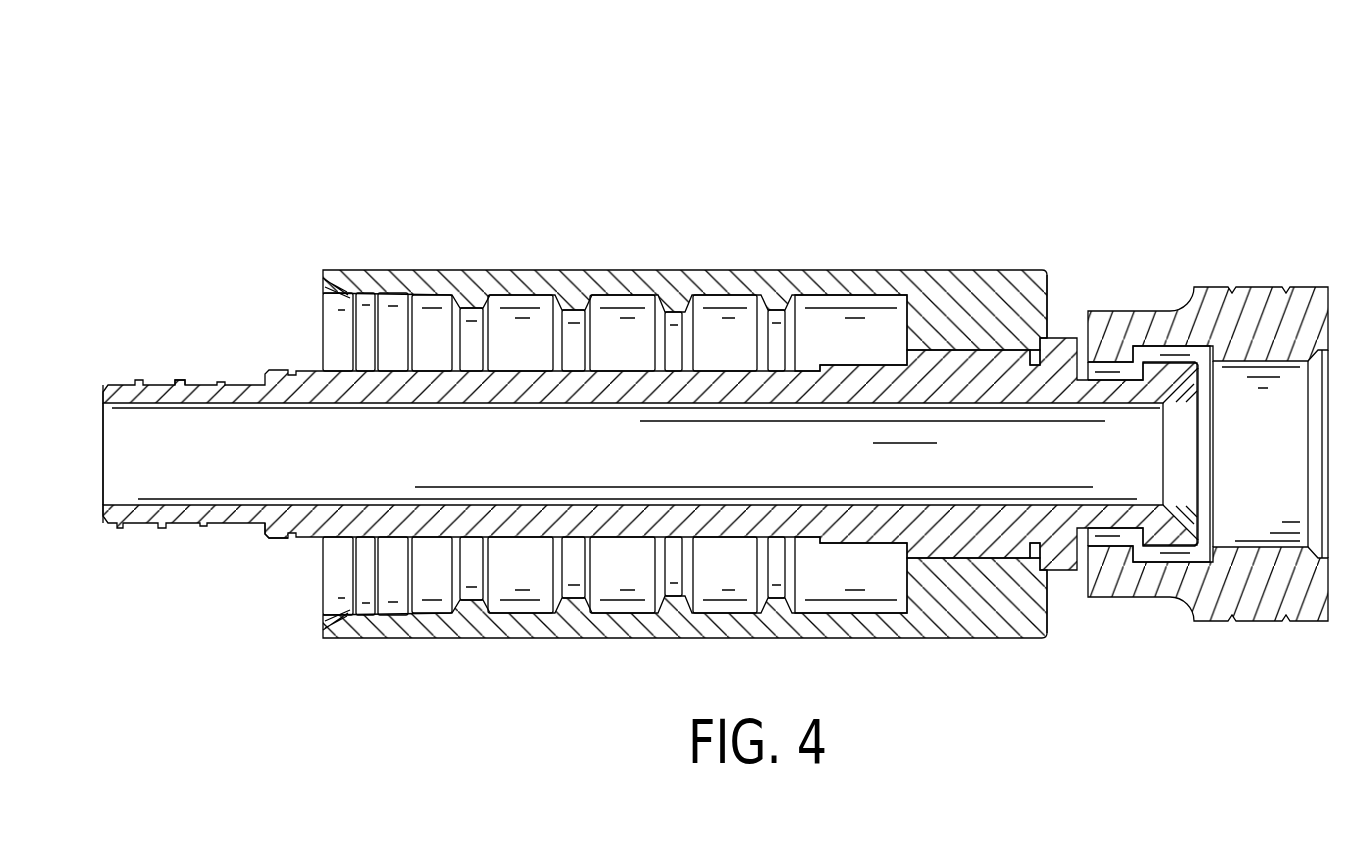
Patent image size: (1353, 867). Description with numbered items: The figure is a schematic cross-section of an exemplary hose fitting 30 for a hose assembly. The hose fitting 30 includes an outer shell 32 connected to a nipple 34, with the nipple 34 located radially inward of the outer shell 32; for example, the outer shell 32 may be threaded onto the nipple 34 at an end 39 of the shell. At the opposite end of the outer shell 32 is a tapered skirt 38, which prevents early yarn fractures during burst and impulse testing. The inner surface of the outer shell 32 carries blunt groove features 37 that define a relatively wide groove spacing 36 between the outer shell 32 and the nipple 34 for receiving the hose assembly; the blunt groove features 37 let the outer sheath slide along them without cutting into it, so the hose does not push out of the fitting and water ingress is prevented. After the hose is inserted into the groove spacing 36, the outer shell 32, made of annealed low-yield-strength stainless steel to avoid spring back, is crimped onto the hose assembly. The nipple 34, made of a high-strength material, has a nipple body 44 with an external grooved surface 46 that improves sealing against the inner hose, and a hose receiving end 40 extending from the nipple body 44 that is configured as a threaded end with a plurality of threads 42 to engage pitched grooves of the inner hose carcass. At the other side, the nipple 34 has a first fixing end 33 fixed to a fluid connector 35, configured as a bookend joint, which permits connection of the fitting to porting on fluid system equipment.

The hose fitting 30 is at (520, 170).
The outer shell 32 is at (430, 270).
The first fixing end 33 is at (1157, 388).
The nipple 34 is at (300, 540).
The fluid connector 35 is at (1250, 298).
The groove spacing 36 is at (347, 585).
The blunt groove features 37 is at (577, 600).
The tapered skirt 38 is at (345, 300).
The end 39 is at (1046, 270).
The hose receiving end 40 is at (115, 384).
The threads 42 is at (179, 380).
The nipple body 44 is at (300, 397).
The grooved surface 46 is at (585, 370).